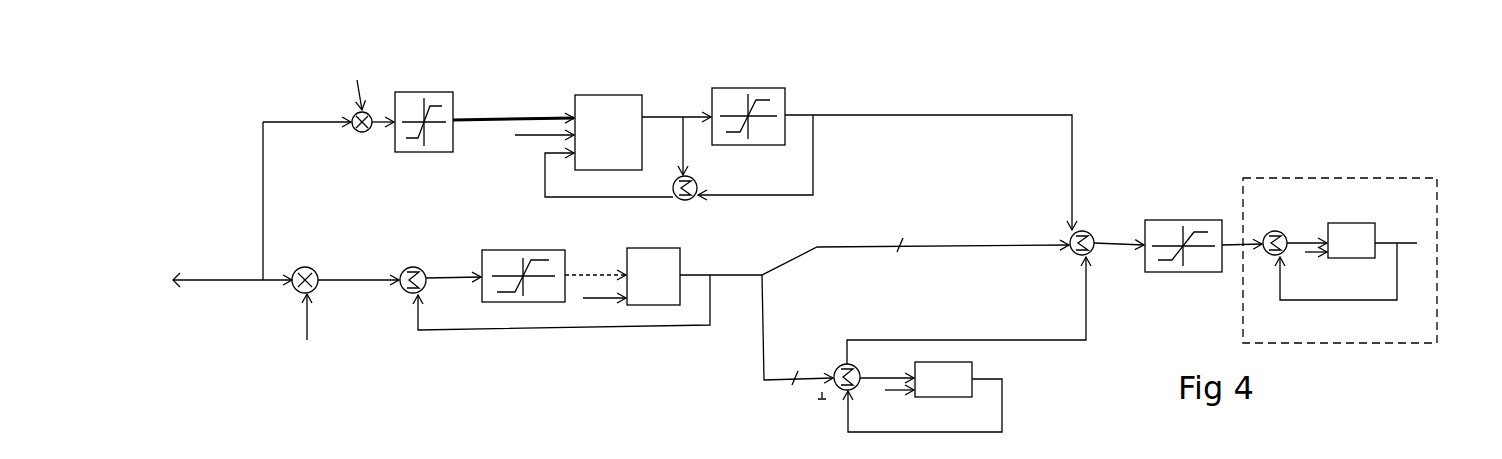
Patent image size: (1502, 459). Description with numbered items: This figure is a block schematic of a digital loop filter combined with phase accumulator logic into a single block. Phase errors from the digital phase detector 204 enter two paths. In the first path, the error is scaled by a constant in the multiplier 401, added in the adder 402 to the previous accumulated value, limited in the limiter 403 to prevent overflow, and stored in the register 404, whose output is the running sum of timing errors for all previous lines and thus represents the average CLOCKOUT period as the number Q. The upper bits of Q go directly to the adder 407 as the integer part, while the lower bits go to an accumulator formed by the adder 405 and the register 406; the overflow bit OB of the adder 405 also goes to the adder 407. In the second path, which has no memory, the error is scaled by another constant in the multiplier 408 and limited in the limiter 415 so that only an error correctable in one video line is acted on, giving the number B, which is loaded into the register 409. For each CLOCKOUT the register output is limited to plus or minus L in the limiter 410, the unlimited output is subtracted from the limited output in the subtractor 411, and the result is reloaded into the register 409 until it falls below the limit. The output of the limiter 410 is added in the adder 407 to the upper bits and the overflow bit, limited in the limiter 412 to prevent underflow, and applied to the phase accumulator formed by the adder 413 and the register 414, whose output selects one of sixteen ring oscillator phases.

The digital phase detector 204 is at (218, 254).
The multiplier 401 is at (345, 296).
The adder 402 is at (554, 284).
The limiter 403 is at (554, 266).
The register 404 is at (823, 263).
The adder 405 is at (835, 356).
The register 406 is at (966, 344).
The adder 407 is at (1086, 253).
The multiplier 408 is at (328, 112).
The register 409 is at (643, 122).
The limiter 410 is at (892, 148).
The subtractor 411 is at (679, 170).
The limiter 412 is at (1203, 245).
The adder 413 is at (1291, 228).
The register 414 is at (1341, 260).
The limiter 415 is at (484, 116).